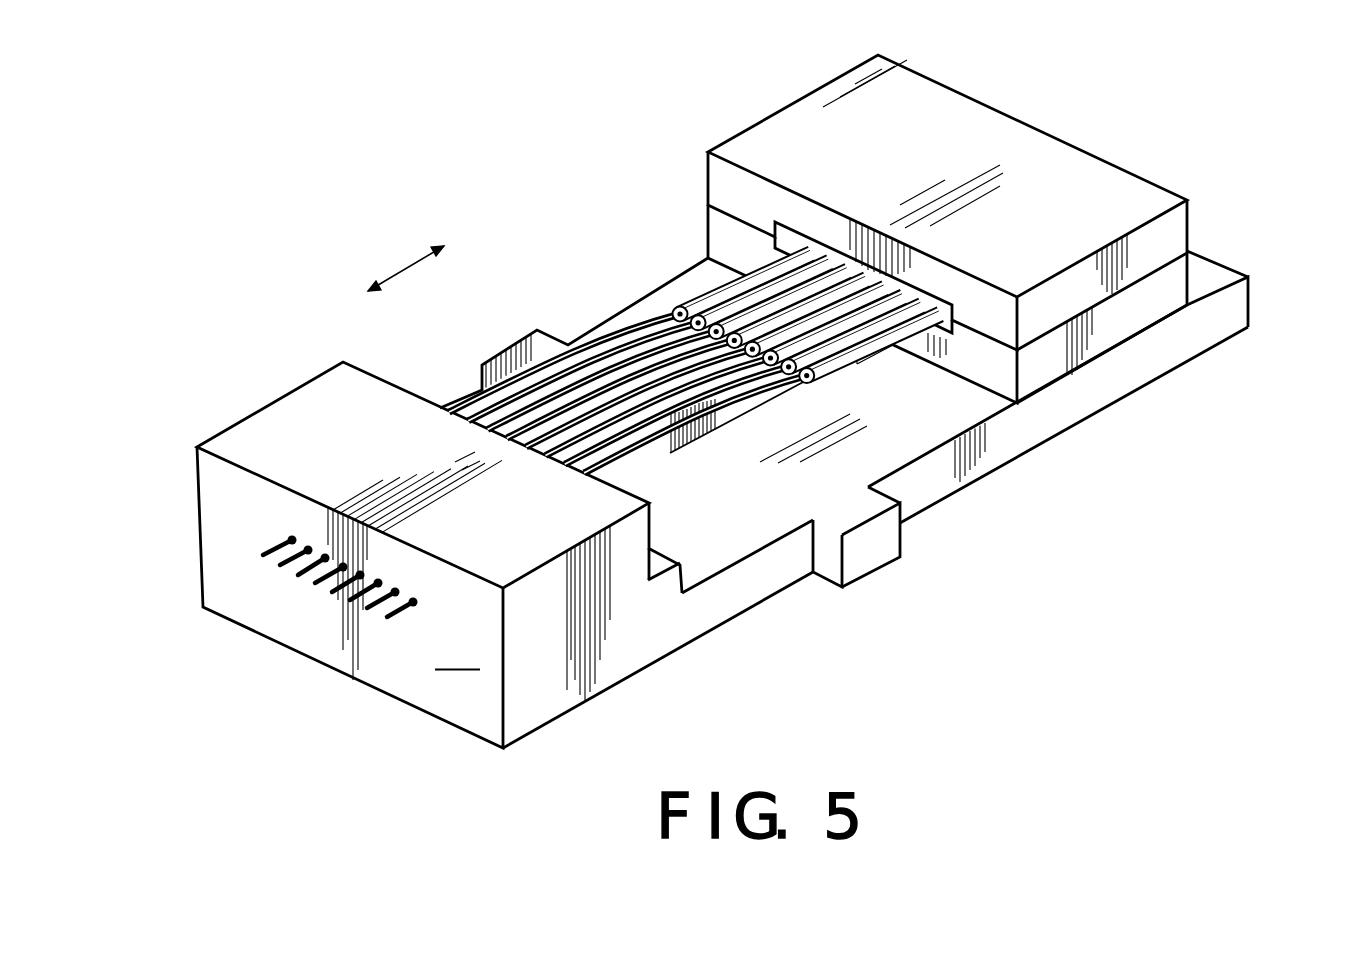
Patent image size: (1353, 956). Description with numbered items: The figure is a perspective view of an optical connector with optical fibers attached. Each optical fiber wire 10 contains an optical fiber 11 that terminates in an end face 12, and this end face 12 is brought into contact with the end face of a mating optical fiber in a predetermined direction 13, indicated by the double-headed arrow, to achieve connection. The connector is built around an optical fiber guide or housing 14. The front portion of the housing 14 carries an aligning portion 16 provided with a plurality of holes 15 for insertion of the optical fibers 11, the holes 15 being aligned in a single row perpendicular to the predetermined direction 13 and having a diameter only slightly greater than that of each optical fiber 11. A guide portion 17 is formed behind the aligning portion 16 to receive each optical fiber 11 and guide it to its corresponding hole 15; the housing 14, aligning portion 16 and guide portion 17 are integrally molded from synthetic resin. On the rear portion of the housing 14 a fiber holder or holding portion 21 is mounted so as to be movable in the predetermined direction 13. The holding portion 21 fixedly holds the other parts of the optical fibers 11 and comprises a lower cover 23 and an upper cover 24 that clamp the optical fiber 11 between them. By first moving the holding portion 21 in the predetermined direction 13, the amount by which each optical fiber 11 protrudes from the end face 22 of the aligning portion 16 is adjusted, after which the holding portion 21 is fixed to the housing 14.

The optical fiber wire 10 is at (705, 298).
The optical fiber 11 is at (645, 335).
The end face 12 is at (263, 554).
The predetermined direction 13 is at (406, 253).
The housing 14 is at (923, 432).
The holes 15 is at (290, 560).
The aligning portion 16 is at (258, 421).
The guide portion 17 is at (668, 558).
The holding portion 21 is at (1015, 229).
The end face of the aligning portion 22 is at (423, 555).
The lower cover 23 is at (1183, 288).
The upper cover 24 is at (1185, 233).